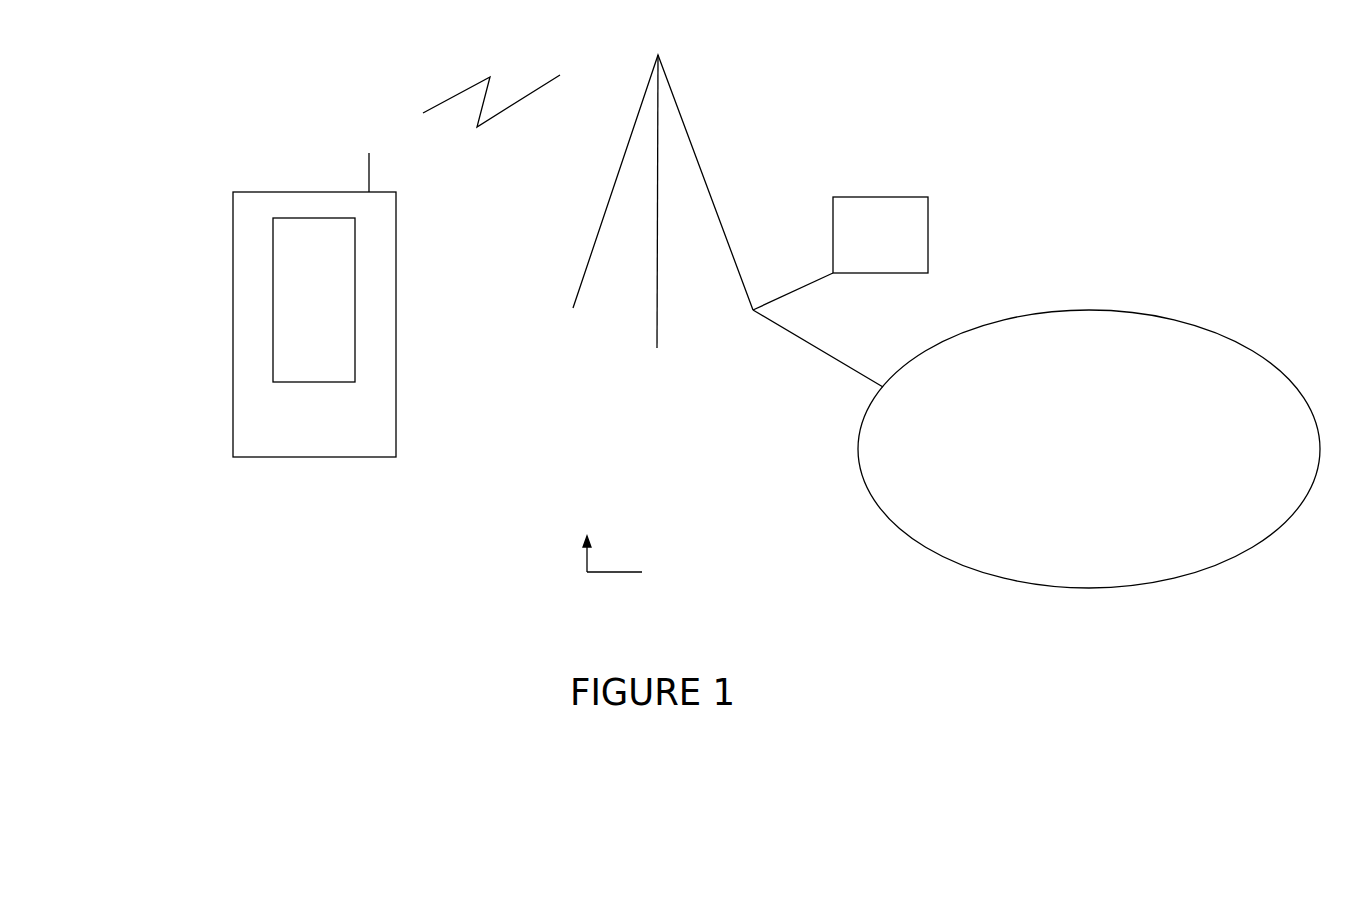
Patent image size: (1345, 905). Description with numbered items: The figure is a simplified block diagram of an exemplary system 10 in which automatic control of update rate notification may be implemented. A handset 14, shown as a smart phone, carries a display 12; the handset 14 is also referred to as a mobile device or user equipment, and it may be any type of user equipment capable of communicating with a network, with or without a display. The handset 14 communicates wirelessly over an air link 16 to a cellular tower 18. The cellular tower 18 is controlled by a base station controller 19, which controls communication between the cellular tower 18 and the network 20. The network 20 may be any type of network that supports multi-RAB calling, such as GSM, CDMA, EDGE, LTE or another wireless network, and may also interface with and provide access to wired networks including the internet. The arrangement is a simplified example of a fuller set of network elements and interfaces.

The system 10 is at (642, 562).
The display 12 is at (287, 282).
The handset 14 is at (258, 418).
The air link 16 is at (491, 76).
The cellular tower 18 is at (686, 146).
The base station controller 19 is at (915, 210).
The network 20 is at (1157, 550).